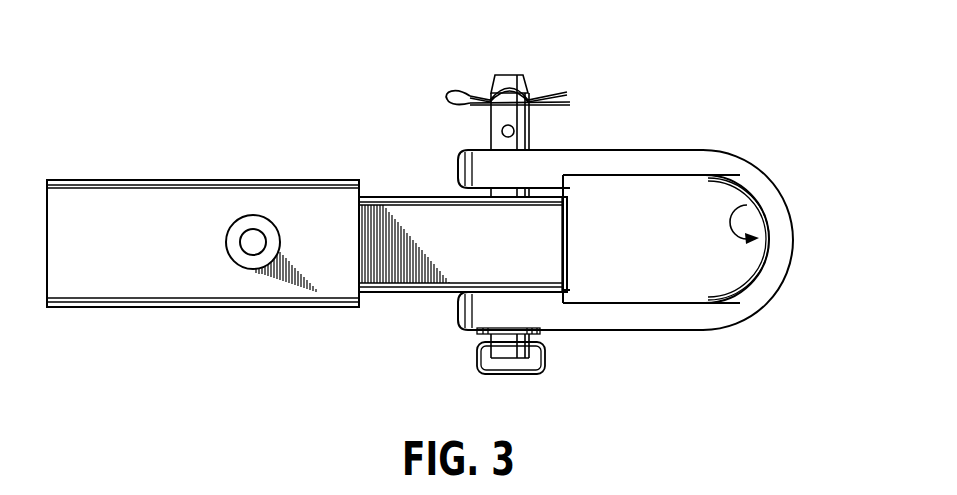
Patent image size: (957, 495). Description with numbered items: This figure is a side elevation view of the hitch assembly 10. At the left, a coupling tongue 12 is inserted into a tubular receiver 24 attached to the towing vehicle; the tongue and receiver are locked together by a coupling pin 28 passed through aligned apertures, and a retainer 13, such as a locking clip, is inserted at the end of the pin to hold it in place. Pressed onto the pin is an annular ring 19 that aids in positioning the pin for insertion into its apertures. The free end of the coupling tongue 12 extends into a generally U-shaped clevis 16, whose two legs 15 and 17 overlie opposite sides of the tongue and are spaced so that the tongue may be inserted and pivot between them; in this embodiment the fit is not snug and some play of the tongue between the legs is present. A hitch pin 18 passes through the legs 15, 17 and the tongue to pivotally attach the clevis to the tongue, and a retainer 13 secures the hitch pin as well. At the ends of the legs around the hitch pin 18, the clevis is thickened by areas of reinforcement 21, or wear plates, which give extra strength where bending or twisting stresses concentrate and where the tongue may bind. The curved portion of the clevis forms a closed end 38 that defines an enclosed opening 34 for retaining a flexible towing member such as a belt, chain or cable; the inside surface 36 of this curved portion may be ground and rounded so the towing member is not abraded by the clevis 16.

The hitch assembly 10 is at (220, 117).
The coupling tongue 12 is at (413, 217).
The retainer 13 is at (447, 96).
The leg 15 is at (645, 160).
The clevis 16 is at (698, 162).
The leg 17 is at (610, 317).
The hitch pin 18 is at (514, 131).
The annular ring 19 is at (237, 255).
The area of reinforcement 21 is at (562, 332).
The receiver 24 is at (250, 193).
The coupling pin 28 is at (250, 235).
The opening 34 is at (670, 256).
The inside surface 36 is at (747, 205).
The closed end 38 is at (793, 238).